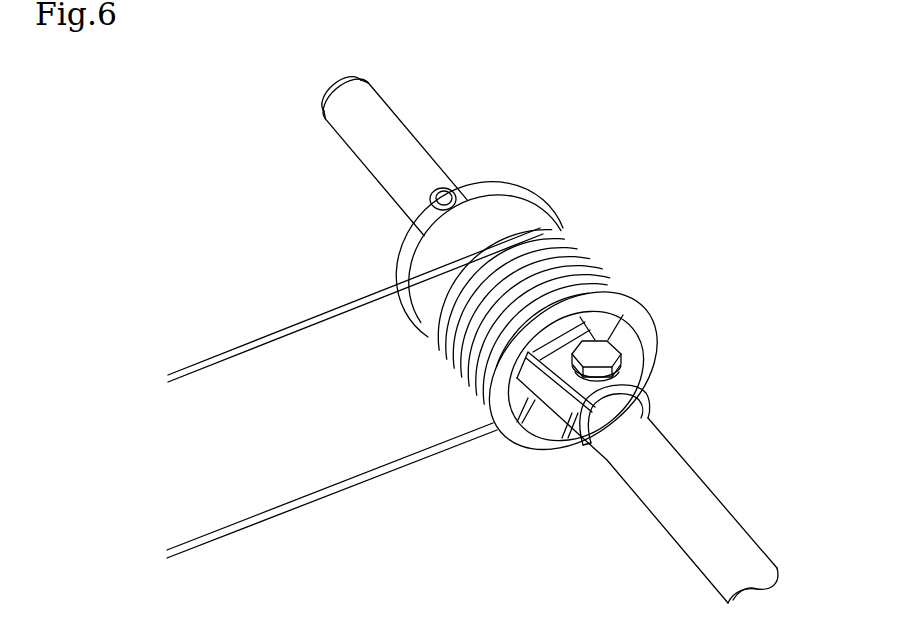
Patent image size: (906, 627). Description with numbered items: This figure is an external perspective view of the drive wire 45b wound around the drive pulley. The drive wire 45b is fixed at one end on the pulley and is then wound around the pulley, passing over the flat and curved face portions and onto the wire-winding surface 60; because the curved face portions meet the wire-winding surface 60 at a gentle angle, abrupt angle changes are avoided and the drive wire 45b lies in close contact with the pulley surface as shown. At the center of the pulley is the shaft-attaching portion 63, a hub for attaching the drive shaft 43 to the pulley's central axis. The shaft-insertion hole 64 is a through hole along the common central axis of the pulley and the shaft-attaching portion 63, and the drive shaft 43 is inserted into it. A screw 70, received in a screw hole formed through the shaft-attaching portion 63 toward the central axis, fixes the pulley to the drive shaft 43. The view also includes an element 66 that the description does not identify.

The drive shaft 43 is at (392, 133).
The drive wire 45b is at (293, 322).
The wire-winding surface 60 is at (590, 292).
The screw 70 is at (605, 358).
The shaft-insertion hole 64 is at (647, 405).
The support spider 66 is at (532, 407).
The shaft-attaching portion 63 is at (572, 418).